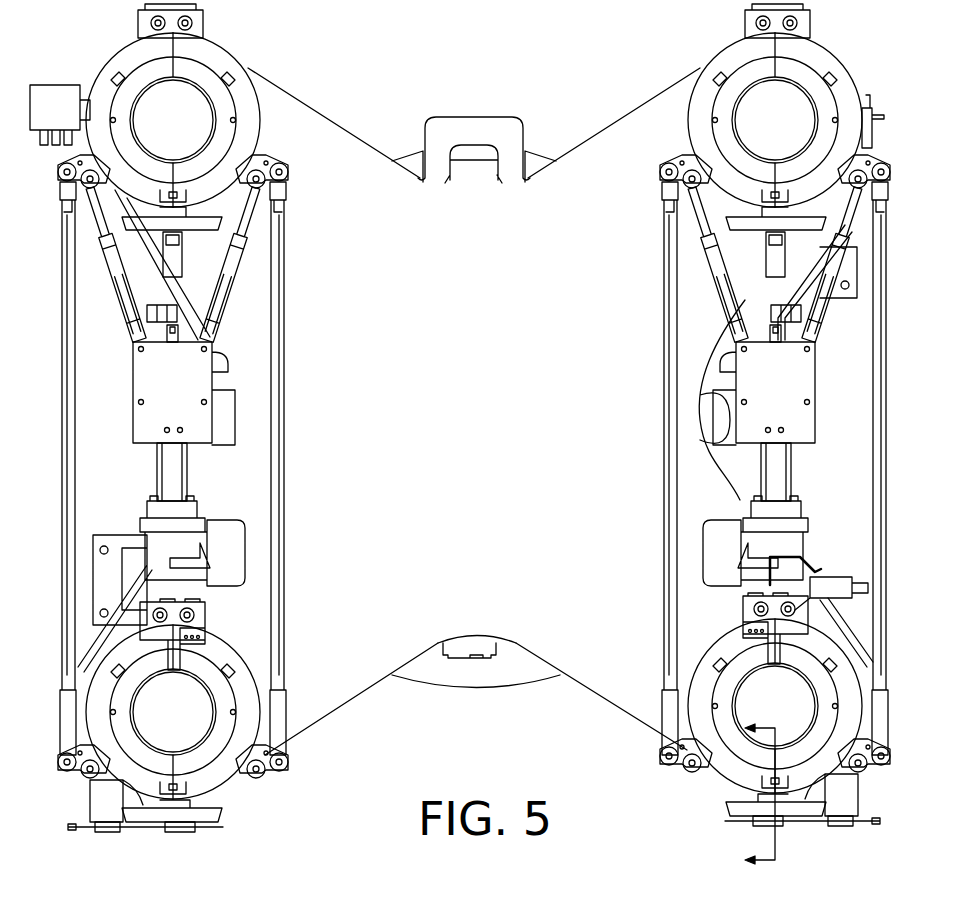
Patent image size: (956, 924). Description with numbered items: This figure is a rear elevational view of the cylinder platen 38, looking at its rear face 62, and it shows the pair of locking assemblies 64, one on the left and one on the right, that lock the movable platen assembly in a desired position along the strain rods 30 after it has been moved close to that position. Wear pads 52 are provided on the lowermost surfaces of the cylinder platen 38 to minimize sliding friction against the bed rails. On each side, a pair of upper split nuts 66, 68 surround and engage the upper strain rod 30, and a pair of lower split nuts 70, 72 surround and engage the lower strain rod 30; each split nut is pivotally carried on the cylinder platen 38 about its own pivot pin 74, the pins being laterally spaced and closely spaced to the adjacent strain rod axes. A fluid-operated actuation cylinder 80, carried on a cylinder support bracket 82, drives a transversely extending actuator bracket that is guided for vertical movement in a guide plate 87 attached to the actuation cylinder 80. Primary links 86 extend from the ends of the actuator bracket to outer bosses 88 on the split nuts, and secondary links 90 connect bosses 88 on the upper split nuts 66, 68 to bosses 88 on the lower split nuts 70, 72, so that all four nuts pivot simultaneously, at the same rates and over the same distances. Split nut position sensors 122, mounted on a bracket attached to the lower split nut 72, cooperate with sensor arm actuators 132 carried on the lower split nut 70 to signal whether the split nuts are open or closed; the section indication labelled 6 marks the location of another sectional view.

The section line 6- 6 is at (758, 793).
The strain rod 30 is at (161, 131).
The cylinder platen 38 is at (455, 92).
The wear pad 52 is at (172, 832).
The rear face 62 is at (466, 326).
The locking assembly 64 is at (333, 245).
The upper split nut 66 is at (215, 55).
The upper split nut 68 is at (125, 60).
The lower split nut 70 is at (220, 777).
The lower split nut 72 is at (128, 780).
The pivot pin 74 is at (155, 22).
The actuation cylinder 80 is at (168, 490).
The cylinder support bracket 82 is at (198, 510).
The primary link 86 is at (135, 325).
The guide plate 87 is at (150, 440).
The outer boss 88 is at (78, 180).
The secondary link 90 is at (70, 395).
The split nut position sensor 122 is at (852, 583).
The sensor arm actuator 132 is at (790, 557).